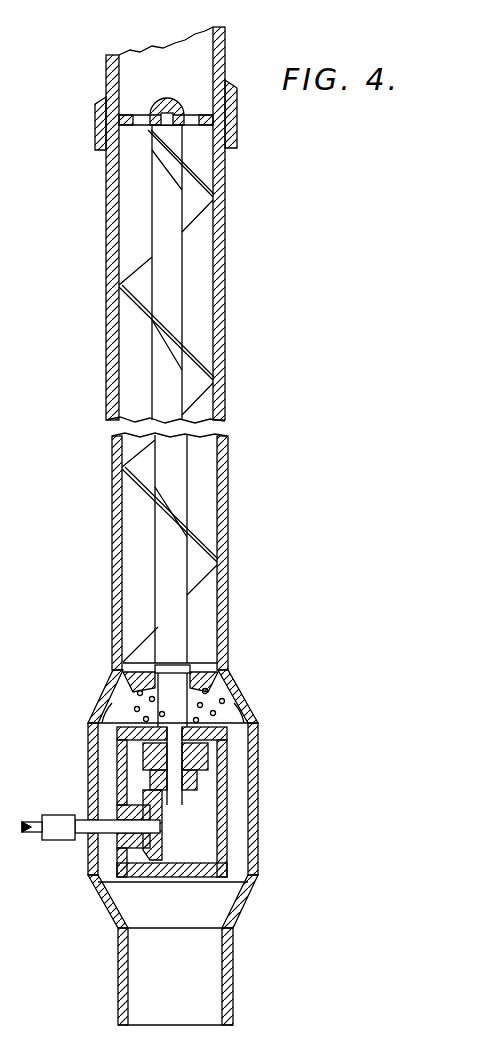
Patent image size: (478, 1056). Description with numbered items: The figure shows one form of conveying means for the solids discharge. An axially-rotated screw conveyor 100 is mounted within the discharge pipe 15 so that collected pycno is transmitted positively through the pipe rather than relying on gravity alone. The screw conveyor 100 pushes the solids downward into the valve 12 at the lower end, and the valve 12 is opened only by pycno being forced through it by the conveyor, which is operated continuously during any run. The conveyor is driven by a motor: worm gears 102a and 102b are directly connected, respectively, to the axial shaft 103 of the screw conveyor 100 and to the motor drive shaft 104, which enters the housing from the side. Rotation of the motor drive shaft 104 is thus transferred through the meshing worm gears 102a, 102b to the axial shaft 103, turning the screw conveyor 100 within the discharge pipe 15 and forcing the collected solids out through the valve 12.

The valve 12 is at (222, 668).
The discharge pipe 15 is at (226, 350).
The screw conveyor 100 is at (205, 211).
The worm gear 102a is at (203, 793).
The worm gear 102b is at (160, 845).
The axial shaft 103 is at (187, 471).
The motor drive shaft 104 is at (92, 815).